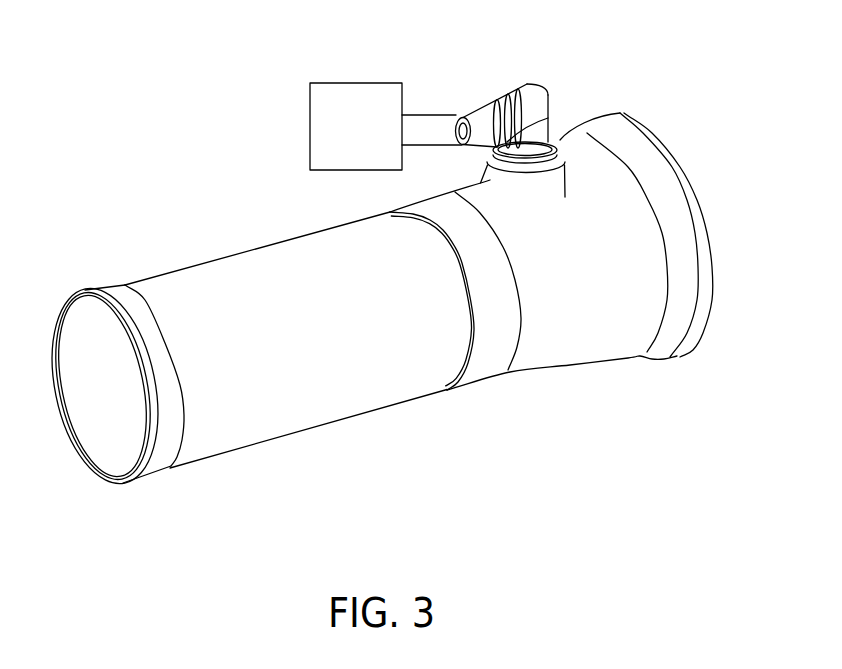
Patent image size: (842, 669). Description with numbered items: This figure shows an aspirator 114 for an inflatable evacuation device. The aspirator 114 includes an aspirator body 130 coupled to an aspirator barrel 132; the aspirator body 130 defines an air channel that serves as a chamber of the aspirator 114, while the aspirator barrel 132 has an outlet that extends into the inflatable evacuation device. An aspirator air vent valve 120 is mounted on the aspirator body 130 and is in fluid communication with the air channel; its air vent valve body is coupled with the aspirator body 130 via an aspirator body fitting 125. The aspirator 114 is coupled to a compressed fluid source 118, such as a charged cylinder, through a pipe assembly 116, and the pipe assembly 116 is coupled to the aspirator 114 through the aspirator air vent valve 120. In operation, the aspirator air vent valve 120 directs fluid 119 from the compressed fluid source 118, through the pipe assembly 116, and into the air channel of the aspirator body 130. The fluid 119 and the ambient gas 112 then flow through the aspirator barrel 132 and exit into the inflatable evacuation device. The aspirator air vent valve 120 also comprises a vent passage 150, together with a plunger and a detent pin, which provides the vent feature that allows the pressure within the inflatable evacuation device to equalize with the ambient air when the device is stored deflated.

The ambient gas 112 is at (783, 208).
The aspirator 114 is at (103, 175).
The pipe assembly 116 is at (437, 132).
The compressed fluid source 118 is at (320, 82).
The fluid 119 is at (376, 142).
The aspirator air vent valve 120 is at (527, 83).
The aspirator body fitting 125 is at (555, 143).
The aspirator body 130 is at (623, 137).
The aspirator barrel 132 is at (267, 248).
The vent passage 150 is at (693, 183).